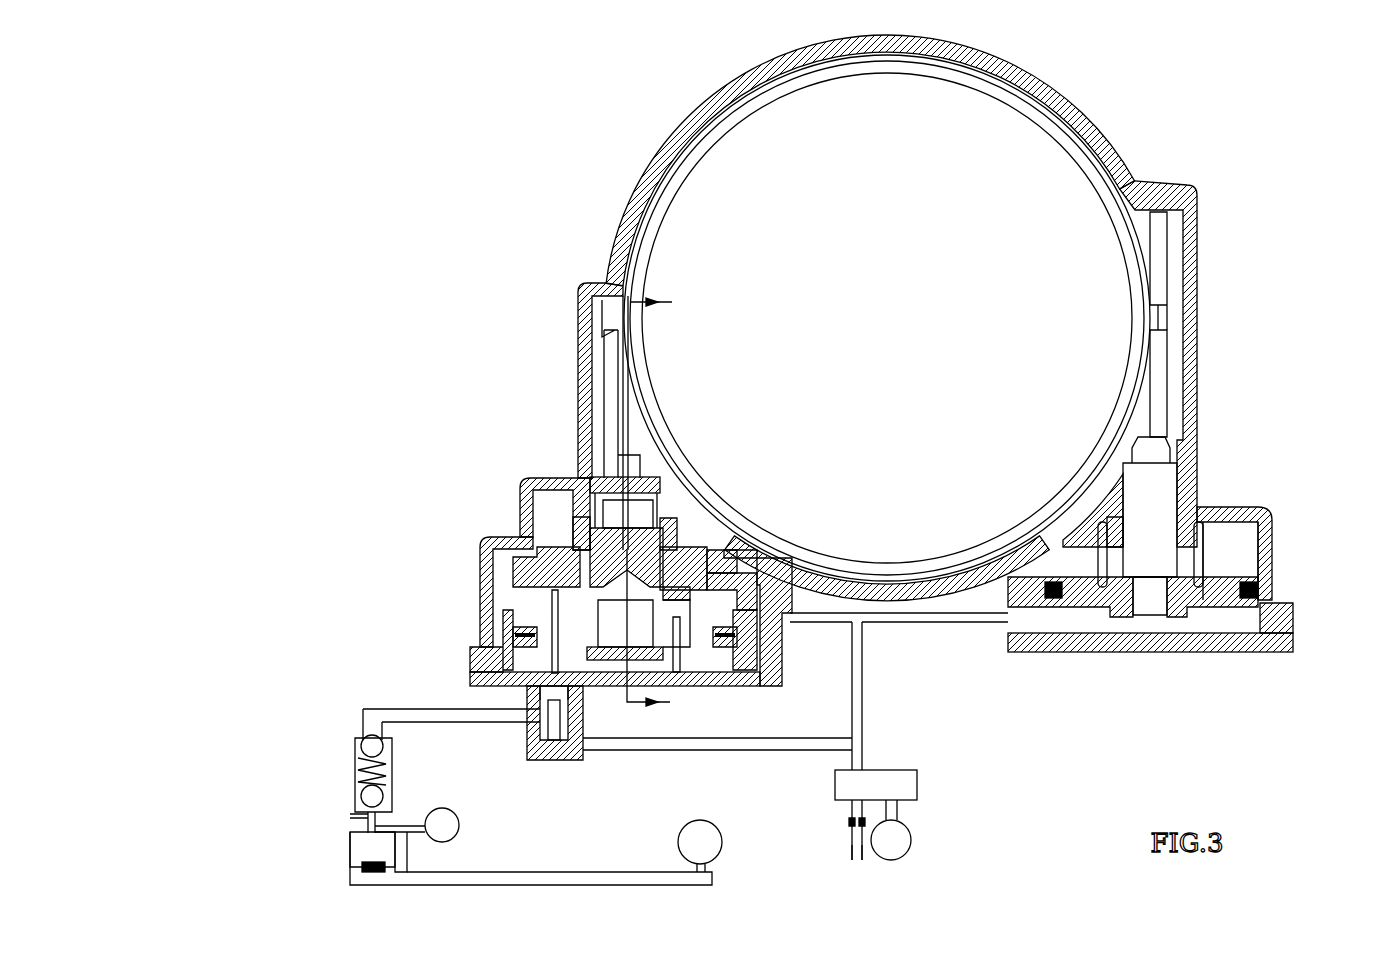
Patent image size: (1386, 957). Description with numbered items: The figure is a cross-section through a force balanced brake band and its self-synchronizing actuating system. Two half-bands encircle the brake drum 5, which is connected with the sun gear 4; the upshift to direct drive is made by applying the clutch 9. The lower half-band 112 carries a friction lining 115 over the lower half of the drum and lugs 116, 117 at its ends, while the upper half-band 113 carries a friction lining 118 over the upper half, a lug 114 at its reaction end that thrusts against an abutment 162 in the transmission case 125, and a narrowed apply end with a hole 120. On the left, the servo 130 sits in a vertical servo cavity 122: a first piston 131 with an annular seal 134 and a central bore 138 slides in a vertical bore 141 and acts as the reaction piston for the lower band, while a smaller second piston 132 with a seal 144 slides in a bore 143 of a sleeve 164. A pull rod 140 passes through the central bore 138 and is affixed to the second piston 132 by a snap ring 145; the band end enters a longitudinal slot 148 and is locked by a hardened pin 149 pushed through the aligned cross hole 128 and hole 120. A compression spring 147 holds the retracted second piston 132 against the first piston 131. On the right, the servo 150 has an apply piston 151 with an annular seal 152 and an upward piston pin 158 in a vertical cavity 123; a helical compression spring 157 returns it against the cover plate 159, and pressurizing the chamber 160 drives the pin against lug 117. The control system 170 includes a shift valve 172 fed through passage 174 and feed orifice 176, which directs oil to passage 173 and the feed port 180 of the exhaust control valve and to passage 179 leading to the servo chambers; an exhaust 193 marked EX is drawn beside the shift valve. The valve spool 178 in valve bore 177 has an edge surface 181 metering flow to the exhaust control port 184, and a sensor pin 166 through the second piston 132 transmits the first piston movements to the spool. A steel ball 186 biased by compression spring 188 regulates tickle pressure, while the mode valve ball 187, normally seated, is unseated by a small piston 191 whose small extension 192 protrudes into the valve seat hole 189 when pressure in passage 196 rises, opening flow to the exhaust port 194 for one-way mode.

The brake drum 5 is at (673, 190).
The upper half-band 113 is at (693, 143).
The friction lining 118 is at (737, 113).
The transmission case 125 is at (642, 185).
The lugs 116 is at (612, 345).
The sun gear 4 is at (647, 503).
The abutment 162 is at (1160, 212).
The lug 114 is at (1158, 250).
The lug 117 is at (1158, 367).
The piston pin 158 is at (1140, 472).
The right side servo 150 is at (1081, 582).
The lower half-band 112 is at (1105, 545).
The helical compression spring 157 is at (1090, 547).
The friction lining 115 is at (1050, 550).
The vertical cavity 123 is at (1228, 533).
The chamber 160 is at (1125, 628).
The apply piston 151 is at (1083, 607).
The annular seal 152 is at (1268, 600).
The cover plate 159 is at (1175, 643).
The passage 179 is at (975, 620).
The left side servo 130 is at (545, 569).
The first piston 131 is at (505, 545).
The servo cavity 122 is at (505, 563).
The annular seal 134 is at (488, 580).
The sleeve 164 is at (482, 620).
The seal 144 is at (512, 637).
The sensor pin 166 is at (550, 662).
The second piston 132 is at (757, 682).
The hardened pin 149 is at (583, 490).
The cross hole 128 is at (545, 488).
The longitudinal slot 148 is at (535, 520).
The pull rod 140 is at (655, 490).
The hole 120 is at (672, 518).
The central bore 138 is at (700, 530).
The bore 143 is at (738, 538).
The vertical bore 141 is at (745, 545).
The snap ring 145 is at (650, 635).
The compression spring 147 is at (700, 645).
The edge surface 181 is at (570, 740).
The valve spool 178 is at (562, 700).
The feed port 180 is at (768, 748).
The passage 173 is at (857, 680).
The shift valve 172 is at (910, 784).
The feed orifice 176 is at (848, 822).
The passage 174 is at (852, 857).
The exhaust muffler 193 is at (905, 838).
The exhaust control port 184 is at (470, 713).
The valve bore 177 is at (560, 762).
The control system 170 is at (282, 811).
The steel ball 186 is at (365, 738).
The compression spring 188 is at (361, 744).
The steel ball 187 is at (358, 772).
The valve seat hole 189 is at (362, 797).
The small extension 192 is at (364, 818).
The small piston 191 is at (360, 850).
The exhaust port 194 is at (405, 838).
The passage 196 is at (556, 880).
The clutch 9 is at (712, 850).